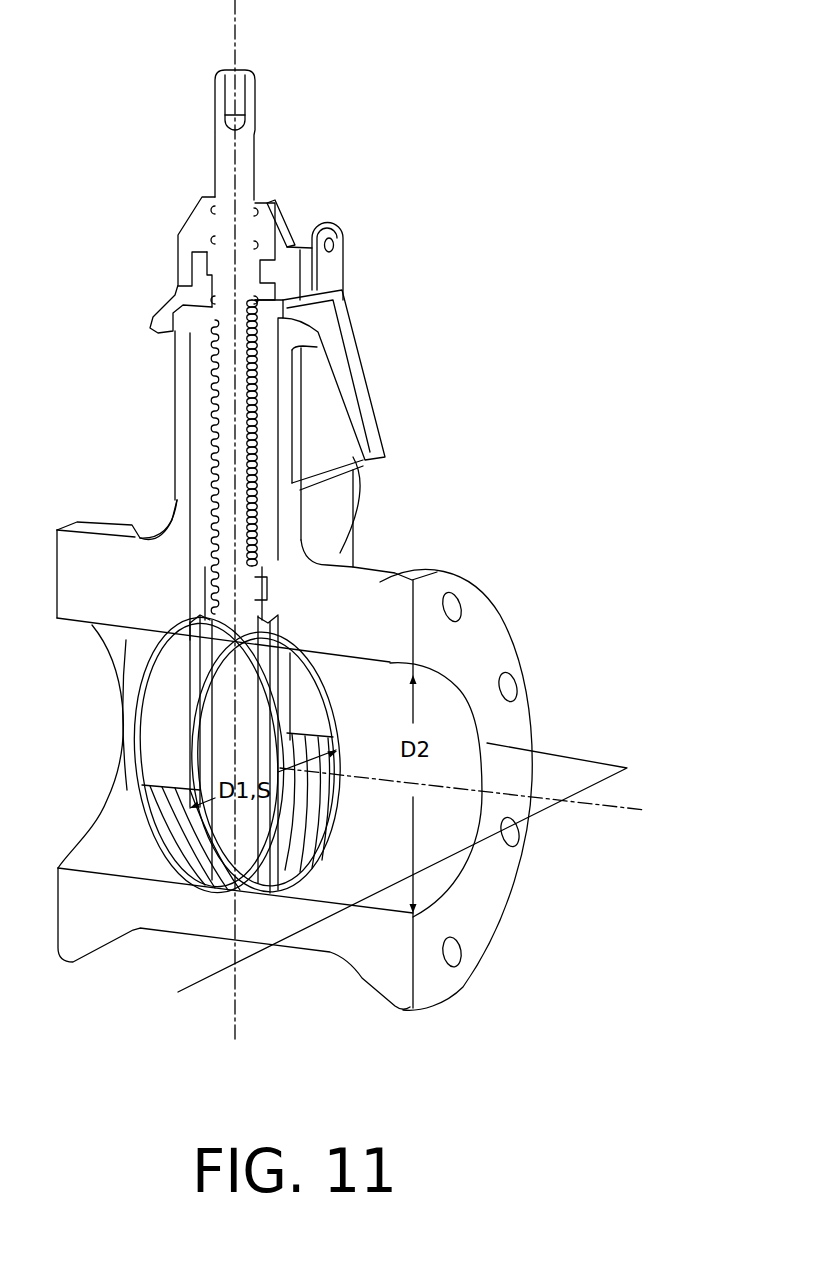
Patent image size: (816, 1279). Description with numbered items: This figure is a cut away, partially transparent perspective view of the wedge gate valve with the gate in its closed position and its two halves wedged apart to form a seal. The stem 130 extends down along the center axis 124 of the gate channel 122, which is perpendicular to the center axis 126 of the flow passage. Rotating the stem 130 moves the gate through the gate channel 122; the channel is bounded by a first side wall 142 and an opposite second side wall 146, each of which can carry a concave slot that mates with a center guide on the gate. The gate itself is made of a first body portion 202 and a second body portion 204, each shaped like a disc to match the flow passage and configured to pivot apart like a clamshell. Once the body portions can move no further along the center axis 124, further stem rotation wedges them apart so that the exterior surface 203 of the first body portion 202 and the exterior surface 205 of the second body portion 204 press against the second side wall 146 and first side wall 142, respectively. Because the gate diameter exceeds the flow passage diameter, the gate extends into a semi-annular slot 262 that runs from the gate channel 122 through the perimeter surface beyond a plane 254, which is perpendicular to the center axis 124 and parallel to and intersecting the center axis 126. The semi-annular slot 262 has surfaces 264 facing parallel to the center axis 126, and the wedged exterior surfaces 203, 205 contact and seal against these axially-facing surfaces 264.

The center axis of the gate channel 124 is at (233, 43).
The stem 130 is at (255, 128).
The gate channel 122 is at (254, 418).
The first side wall of the gate channel 142 is at (188, 457).
The second side wall of the gate channel 146 is at (200, 612).
The first body portion 202 is at (173, 755).
The exterior surface of the first body portion 203 is at (78, 746).
The second body portion 204 is at (307, 847).
The axially-facing surfaces of the semi-annular slot 264 is at (154, 715).
The semi-annular slot 262 is at (279, 754).
The exterior surface of the second body portion 205 is at (418, 784).
The plane 254 is at (598, 752).
The center axis of the flow passage 126 is at (620, 807).